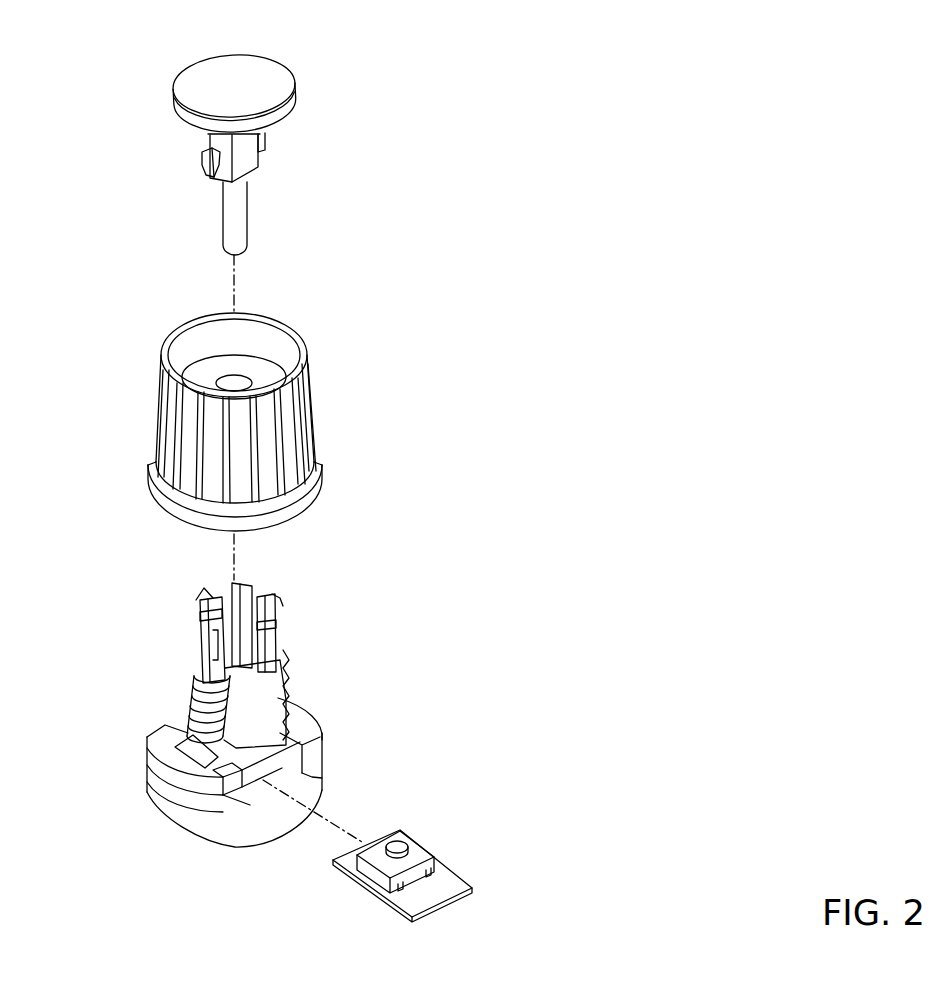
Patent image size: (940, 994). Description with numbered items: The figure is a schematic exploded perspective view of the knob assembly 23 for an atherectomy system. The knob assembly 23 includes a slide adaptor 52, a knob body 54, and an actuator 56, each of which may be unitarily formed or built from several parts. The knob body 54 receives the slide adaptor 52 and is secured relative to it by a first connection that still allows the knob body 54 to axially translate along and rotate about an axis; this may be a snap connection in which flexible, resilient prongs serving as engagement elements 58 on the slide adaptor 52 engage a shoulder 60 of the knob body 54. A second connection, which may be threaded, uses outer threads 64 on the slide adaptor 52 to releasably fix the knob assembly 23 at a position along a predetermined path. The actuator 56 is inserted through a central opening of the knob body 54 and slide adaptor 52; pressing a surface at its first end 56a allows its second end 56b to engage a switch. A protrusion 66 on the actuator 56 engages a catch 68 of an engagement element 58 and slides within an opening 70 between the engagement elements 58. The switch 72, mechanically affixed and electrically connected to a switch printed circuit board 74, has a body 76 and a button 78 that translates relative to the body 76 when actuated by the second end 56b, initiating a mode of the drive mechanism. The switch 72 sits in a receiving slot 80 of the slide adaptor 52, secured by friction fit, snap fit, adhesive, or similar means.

The knob assembly 23 is at (553, 212).
The slide adaptor 52 is at (251, 772).
The knob body 54 is at (220, 409).
The actuator 56 is at (253, 166).
The first end 56a is at (217, 83).
The second end 56b is at (223, 253).
The engagement element 58 is at (222, 613).
The shoulder 60 is at (247, 378).
The outer threads 64 is at (192, 676).
The protrusion 66 is at (202, 167).
The catch 68 is at (202, 628).
The opening 70 is at (188, 650).
The switch 72 is at (411, 855).
The switch printed circuit board 74 is at (453, 885).
The body 76 is at (427, 860).
The button 78 is at (390, 852).
The receiving slot 80 is at (305, 777).